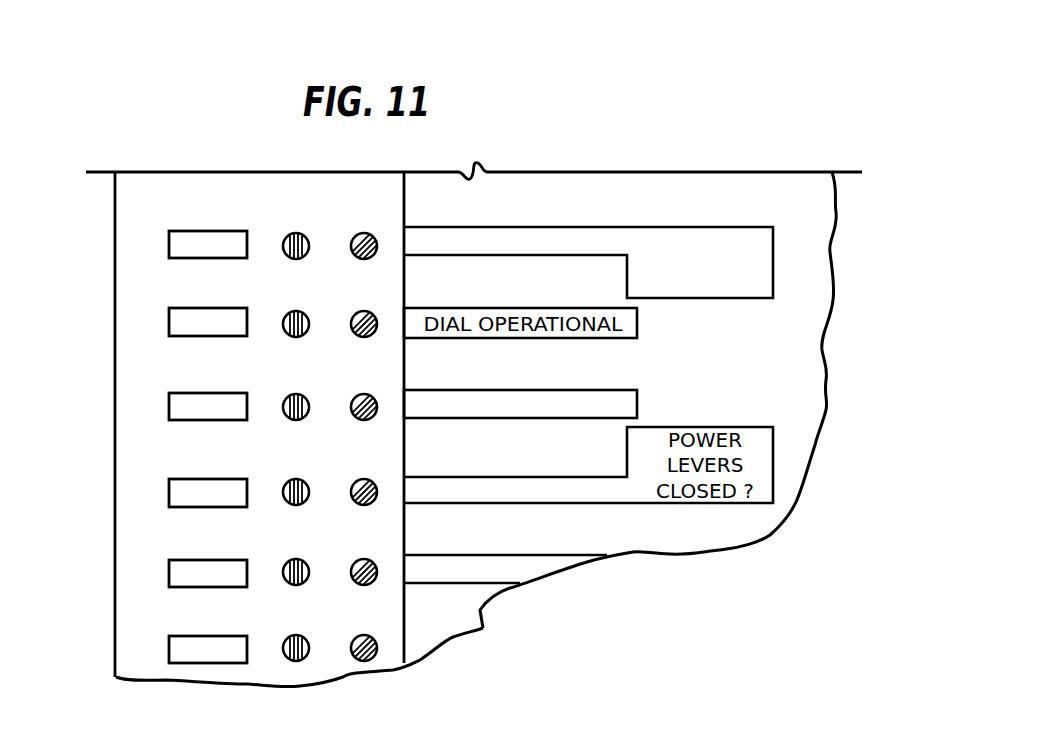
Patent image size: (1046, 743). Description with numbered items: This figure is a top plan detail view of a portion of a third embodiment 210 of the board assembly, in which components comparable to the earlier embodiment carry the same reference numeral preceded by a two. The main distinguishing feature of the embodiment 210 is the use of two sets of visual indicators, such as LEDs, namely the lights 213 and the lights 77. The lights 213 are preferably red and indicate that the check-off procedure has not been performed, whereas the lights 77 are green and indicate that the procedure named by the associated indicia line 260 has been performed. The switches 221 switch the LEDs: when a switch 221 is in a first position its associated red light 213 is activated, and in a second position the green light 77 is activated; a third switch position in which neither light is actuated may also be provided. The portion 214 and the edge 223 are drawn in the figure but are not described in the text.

The embodiment 210 is at (701, 151).
The key panel 214 is at (133, 401).
The switch 221 is at (200, 247).
The light 213 is at (296, 233).
The light 77 is at (363, 394).
The indicia line 260 is at (715, 288).
The torn edge of display 223 is at (832, 371).